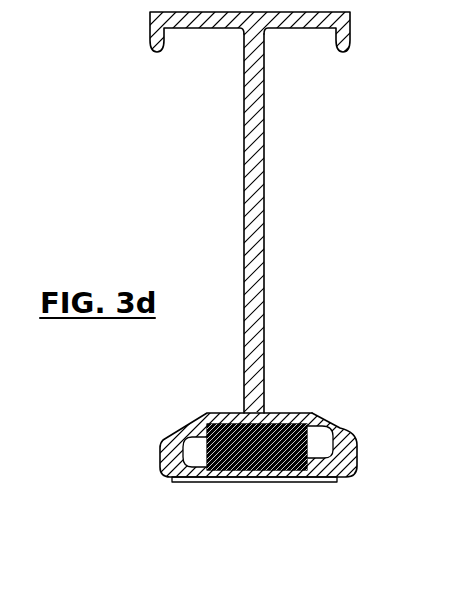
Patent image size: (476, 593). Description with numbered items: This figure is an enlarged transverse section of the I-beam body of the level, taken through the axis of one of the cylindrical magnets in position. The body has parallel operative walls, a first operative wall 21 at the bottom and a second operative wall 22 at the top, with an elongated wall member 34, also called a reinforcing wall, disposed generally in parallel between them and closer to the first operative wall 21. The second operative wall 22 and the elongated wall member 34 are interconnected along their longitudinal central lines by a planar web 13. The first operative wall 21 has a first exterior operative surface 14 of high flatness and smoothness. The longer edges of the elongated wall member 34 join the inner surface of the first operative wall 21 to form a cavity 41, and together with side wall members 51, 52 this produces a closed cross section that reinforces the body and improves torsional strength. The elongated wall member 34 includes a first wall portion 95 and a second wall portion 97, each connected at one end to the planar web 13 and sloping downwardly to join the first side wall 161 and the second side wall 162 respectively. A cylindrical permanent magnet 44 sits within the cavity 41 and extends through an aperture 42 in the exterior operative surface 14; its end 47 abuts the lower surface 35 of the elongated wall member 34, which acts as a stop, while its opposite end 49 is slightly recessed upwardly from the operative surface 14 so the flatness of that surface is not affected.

The planar web 13 is at (267, 197).
The first exterior operative surface 14 is at (300, 489).
The first operative wall 21 is at (195, 486).
The second operative wall 22 is at (202, 32).
The elongated wall member 34 is at (284, 423).
The lower surface of elongated wall member 35 is at (291, 416).
The cavity 41 is at (322, 433).
The aperture 42 is at (318, 492).
The cylindrical permanent magnet 44 is at (238, 482).
The end of magnet 47 is at (237, 410).
The opposite end of magnet 49 is at (252, 482).
The side wall member 51 is at (264, 232).
The side wall member 52 is at (244, 221).
The first wall portion 95 is at (176, 442).
The second wall portion 97 is at (320, 428).
The first side wall 161 is at (160, 457).
The second side wall 162 is at (357, 447).